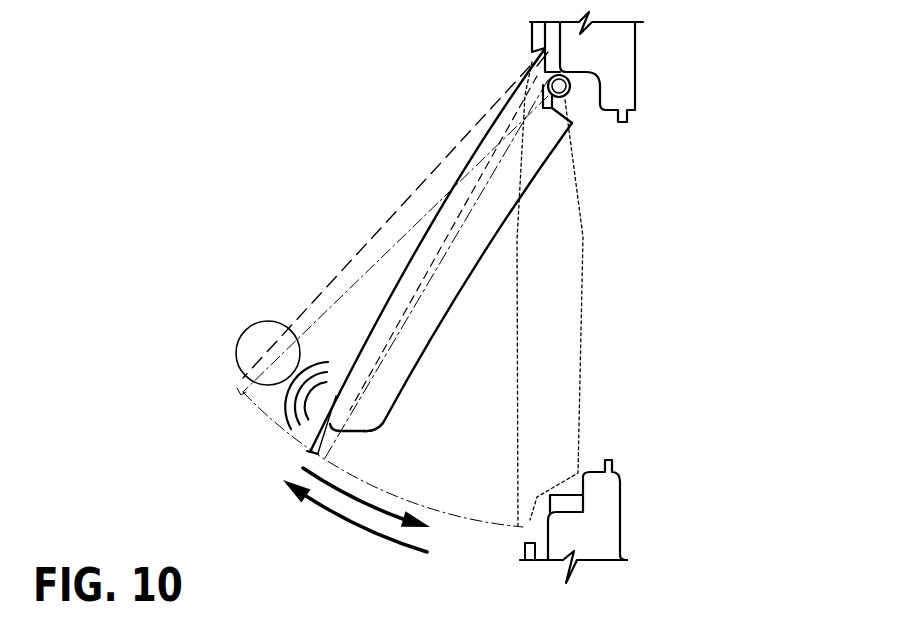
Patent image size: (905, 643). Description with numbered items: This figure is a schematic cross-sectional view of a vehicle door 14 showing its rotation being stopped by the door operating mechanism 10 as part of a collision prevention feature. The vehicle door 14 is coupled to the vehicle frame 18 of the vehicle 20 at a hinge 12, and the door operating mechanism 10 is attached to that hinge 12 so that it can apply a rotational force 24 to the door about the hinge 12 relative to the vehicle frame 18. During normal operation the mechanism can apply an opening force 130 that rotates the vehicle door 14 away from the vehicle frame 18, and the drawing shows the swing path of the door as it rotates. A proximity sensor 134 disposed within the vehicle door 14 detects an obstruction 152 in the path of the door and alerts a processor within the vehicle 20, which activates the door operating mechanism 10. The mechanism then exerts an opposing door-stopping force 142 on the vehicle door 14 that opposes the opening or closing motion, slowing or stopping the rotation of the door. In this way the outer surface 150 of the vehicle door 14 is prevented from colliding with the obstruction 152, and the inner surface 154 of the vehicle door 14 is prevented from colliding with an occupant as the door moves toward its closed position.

The door operating mechanism 10 is at (586, 97).
The hinge 12 is at (525, 63).
The vehicle door 14 is at (453, 169).
The vehicle frame 18 is at (649, 42).
The vehicle 20 is at (297, 93).
The rotational force 24 is at (275, 494).
The opening force 130 is at (373, 530).
The proximity sensor 134 is at (288, 433).
The door-stopping force 142 is at (387, 514).
The outer surface 150 is at (388, 290).
The obstruction 152 is at (250, 340).
The inner surface 154 is at (423, 353).